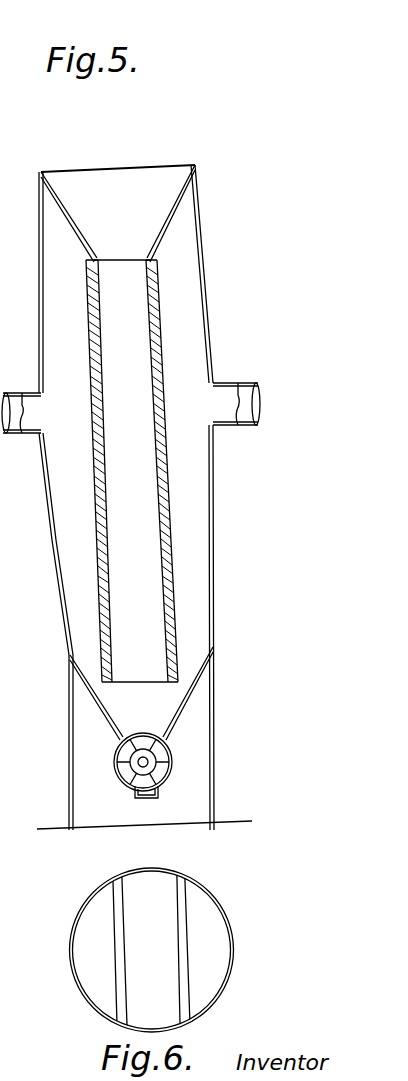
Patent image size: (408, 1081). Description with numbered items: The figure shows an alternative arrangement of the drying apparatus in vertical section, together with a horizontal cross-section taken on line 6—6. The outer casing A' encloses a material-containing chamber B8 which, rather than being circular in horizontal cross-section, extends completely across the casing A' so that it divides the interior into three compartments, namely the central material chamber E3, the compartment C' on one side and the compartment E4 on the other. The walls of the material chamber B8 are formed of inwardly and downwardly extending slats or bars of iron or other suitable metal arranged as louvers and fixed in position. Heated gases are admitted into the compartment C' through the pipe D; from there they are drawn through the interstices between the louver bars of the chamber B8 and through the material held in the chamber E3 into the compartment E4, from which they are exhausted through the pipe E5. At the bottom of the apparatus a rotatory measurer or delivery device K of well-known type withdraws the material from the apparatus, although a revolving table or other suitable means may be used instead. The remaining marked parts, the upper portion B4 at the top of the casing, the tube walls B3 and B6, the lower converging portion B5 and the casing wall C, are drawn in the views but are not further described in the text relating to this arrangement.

In FIG. 5, the outer casing A' is at (151, 497).
In FIG. 6, the outer casing A' is at (159, 948).
In FIG. 5, the inner tube B3 is at (178, 620).
In FIG. 6, the inner tube B3 is at (117, 900).
In FIG. 5, the upper funnel B4 is at (118, 213).
In FIG. 5, the lower funnel B5 is at (141, 693).
In FIG. 6, the tube wall B6 is at (186, 993).
In FIG. 5, the material-containing chamber B8 is at (88, 332).
In FIG. 5, the casing wall C is at (217, 490).
In FIG. 6, the compartment C' is at (228, 937).
In FIG. 5, the pipe D is at (243, 385).
In FIG. 5, the material-containing chamber E3 is at (129, 444).
In FIG. 6, the material-containing chamber E3 is at (152, 978).
In FIG. 5, the compartment E4 is at (60, 505).
In FIG. 6, the compartment E4 is at (95, 984).
In FIG. 5, the exhaust pipe E5 is at (14, 425).
In FIG. 5, the rotatory measurer or delivery device K is at (157, 755).
In FIG. 5, the section line 6 is at (85, 545).